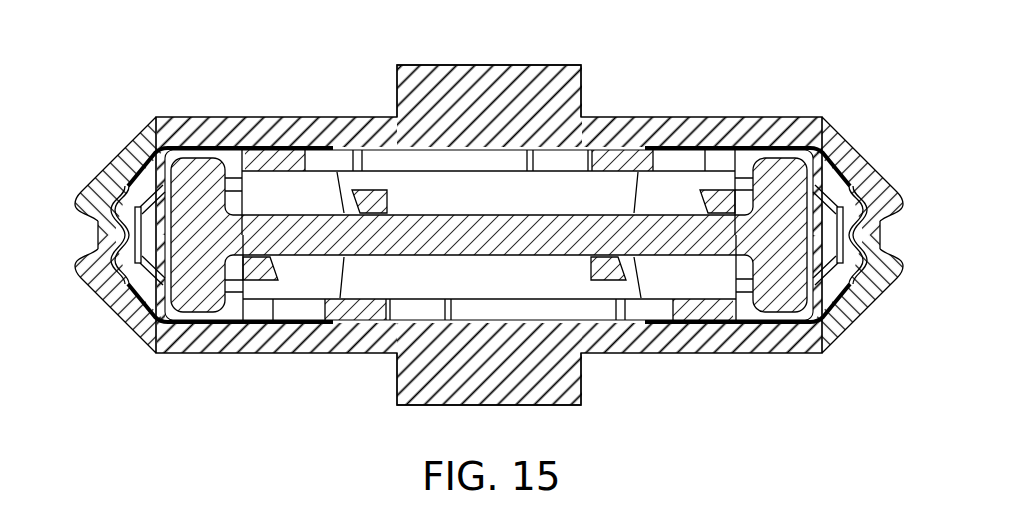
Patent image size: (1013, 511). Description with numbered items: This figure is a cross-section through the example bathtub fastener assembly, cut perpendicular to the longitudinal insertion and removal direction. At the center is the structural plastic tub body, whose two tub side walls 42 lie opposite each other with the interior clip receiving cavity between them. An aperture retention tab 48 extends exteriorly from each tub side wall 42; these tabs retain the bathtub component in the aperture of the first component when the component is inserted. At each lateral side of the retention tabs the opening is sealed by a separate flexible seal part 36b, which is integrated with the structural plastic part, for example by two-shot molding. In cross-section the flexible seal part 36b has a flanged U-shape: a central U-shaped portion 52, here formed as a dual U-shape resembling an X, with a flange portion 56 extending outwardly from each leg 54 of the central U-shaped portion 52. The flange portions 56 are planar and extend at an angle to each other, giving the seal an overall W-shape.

The flexible seal part 36b is at (74, 276).
The tub side wall 42 is at (757, 150).
The aperture retention tab 48 is at (487, 75).
The central U-shaped portion 52 is at (92, 235).
The leg 54 is at (124, 205).
The flange portion 56 is at (140, 148).